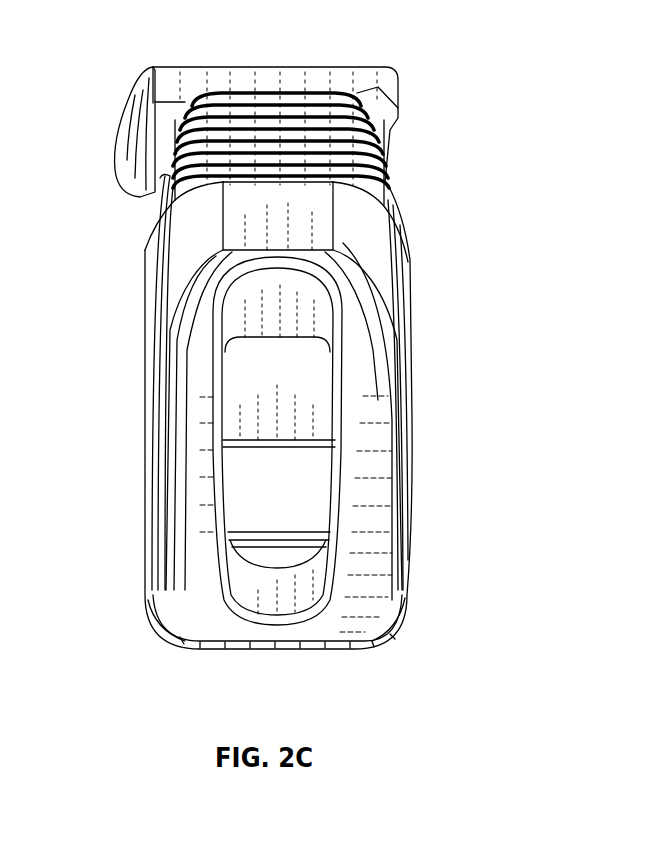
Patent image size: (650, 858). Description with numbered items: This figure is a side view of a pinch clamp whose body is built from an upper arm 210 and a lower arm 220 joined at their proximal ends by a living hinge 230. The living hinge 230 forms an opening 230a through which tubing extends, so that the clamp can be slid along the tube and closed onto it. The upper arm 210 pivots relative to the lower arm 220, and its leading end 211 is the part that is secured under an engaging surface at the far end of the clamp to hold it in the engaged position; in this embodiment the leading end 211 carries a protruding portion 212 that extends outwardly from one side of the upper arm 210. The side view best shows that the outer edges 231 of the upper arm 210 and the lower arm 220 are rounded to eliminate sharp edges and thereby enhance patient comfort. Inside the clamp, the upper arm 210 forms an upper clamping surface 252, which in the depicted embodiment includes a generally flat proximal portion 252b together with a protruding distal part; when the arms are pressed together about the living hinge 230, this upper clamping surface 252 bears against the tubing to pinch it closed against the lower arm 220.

The upper arm 210 is at (220, 653).
The leading end 211 is at (275, 67).
The protruding portion 212 is at (118, 138).
The lower arm 220 is at (150, 240).
The outer edges 231 is at (150, 282).
The living hinge 230 is at (373, 545).
The opening 230a is at (285, 603).
The upper clamping surface 252 is at (310, 420).
The generally flat proximal portion 252b is at (300, 447).